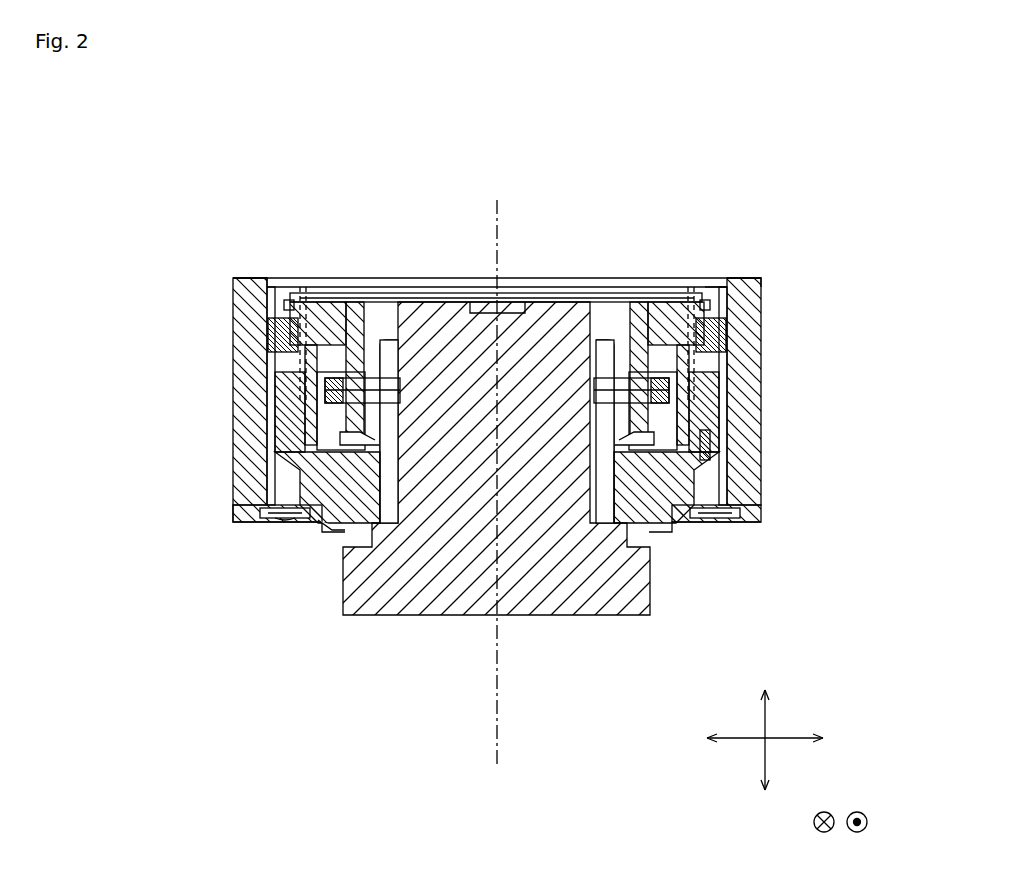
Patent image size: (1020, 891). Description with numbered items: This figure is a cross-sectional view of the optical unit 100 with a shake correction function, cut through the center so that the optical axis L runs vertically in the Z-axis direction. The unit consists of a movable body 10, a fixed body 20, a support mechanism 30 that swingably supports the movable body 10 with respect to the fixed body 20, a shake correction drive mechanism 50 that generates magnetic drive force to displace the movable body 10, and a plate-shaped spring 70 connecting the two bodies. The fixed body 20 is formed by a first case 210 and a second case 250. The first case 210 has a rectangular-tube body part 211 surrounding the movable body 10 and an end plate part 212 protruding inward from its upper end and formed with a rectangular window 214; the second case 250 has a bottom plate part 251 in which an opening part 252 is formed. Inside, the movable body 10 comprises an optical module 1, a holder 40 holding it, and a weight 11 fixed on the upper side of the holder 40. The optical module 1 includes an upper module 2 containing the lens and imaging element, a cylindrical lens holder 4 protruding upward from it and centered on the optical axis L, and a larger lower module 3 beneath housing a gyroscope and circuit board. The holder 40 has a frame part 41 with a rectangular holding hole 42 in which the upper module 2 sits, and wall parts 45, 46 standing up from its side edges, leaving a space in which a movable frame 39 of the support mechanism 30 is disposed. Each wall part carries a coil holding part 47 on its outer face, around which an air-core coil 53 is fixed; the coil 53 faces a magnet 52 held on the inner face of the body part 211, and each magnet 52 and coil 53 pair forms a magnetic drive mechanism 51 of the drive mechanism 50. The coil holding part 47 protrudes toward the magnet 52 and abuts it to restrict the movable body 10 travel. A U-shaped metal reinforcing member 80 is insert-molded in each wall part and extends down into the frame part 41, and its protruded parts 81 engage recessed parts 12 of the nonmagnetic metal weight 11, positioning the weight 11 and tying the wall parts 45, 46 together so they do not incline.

The optical unit 100 is at (194, 212).
The movable body 10 is at (648, 193).
The fixed body 20 is at (840, 520).
The optical module 1 is at (556, 296).
The upper module 2 is at (385, 300).
The lower module 3 is at (345, 588).
The lens holder 4 is at (443, 300).
The weight 11 is at (298, 297).
The recessed part 12 is at (298, 290).
The protruded part 81 is at (288, 300).
The wall part 46 is at (330, 302).
The movable frame 39 is at (352, 300).
The wall part 45 is at (656, 302).
The holder 40 is at (612, 296).
The support mechanism 30 is at (632, 296).
The rectangular window 214 is at (719, 285).
The end plate part 212 is at (740, 282).
The body part 211 is at (755, 358).
The first case 210 is at (765, 402).
The second case 250 is at (767, 510).
The bottom plate part 251 is at (244, 525).
The opening part 252 is at (270, 528).
The plate-shaped spring 70 is at (296, 528).
The reinforcing member 80 is at (300, 444).
The coil holding part 47 is at (255, 378).
The coil 53 is at (290, 308).
The magnet 52 is at (275, 360).
The magnetic drive mechanism 51 is at (158, 290).
The shake correction drive mechanism 50 is at (500, 322).
The frame part 41 is at (700, 500).
The holding hole 42 is at (657, 525).
The optical axis L is at (507, 480).